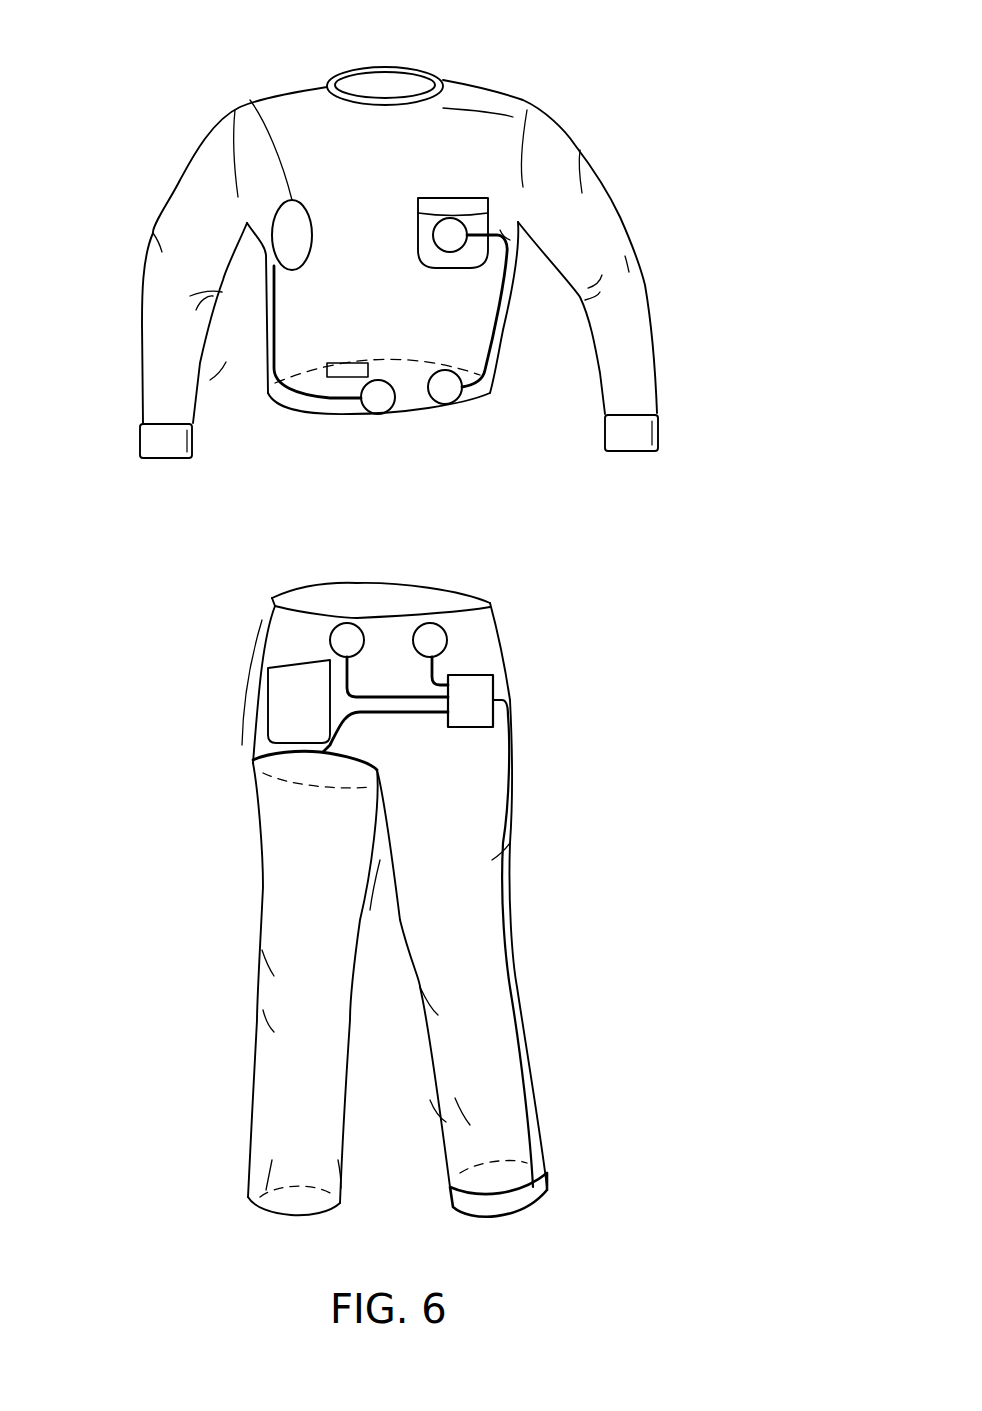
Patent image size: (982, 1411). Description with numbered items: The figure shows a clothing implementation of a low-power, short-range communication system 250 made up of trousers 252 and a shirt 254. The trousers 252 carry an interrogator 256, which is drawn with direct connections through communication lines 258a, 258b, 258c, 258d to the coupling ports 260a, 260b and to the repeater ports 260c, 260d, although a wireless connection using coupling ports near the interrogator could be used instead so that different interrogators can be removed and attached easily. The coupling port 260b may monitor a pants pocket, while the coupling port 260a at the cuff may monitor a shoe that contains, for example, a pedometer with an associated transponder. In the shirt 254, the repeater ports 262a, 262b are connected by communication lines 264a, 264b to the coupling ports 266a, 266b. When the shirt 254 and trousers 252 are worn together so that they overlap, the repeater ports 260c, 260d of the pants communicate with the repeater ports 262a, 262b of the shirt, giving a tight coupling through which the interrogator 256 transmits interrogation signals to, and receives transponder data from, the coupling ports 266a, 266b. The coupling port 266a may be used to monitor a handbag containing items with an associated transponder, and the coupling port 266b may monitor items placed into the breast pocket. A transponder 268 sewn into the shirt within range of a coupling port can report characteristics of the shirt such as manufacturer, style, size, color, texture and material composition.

The communication system 250 is at (588, 58).
The trousers 252 is at (293, 890).
The shirt 254 is at (530, 127).
The interrogator 256 is at (493, 690).
The communication line 258a is at (507, 760).
The communication line 258b is at (417, 720).
The communication line 258c is at (340, 672).
The communication line 258d is at (440, 663).
The coupling port 260a is at (533, 1207).
The coupling port 260b is at (267, 743).
The repeater port 260c is at (347, 626).
The repeater port 260d is at (447, 640).
The repeater port 262a is at (364, 410).
The repeater port 262b is at (470, 397).
The communication line 264a is at (270, 318).
The communication line 264b is at (497, 323).
The coupling port 266a is at (252, 110).
The coupling port 266b is at (467, 230).
The transponder 268 is at (287, 370).